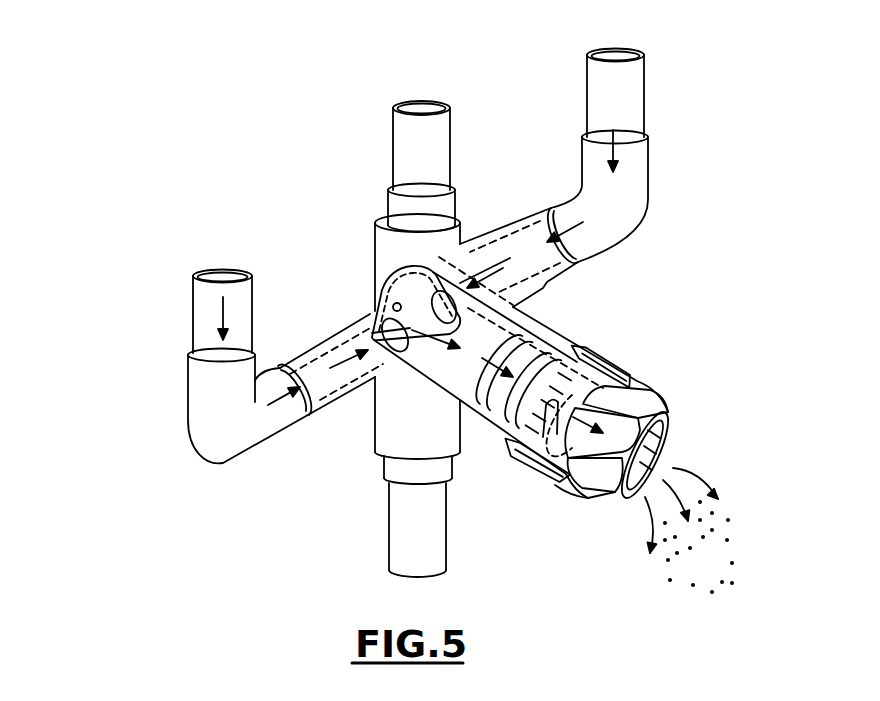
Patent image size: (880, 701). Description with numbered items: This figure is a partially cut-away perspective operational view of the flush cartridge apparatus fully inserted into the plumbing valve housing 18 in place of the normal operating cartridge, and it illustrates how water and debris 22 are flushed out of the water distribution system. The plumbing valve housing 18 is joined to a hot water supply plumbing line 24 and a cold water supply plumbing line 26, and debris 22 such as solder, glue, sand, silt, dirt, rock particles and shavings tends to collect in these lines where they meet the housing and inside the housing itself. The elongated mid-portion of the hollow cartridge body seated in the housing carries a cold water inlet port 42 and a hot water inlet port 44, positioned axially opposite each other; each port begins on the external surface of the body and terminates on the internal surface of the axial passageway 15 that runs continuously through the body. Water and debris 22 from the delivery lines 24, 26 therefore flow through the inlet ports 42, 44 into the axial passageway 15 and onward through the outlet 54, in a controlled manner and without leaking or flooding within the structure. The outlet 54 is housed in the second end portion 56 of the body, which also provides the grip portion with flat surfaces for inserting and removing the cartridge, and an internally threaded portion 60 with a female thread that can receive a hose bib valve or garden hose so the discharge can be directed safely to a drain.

The axial passageway 15 is at (517, 306).
The plumbing valve housing 18 is at (387, 412).
The debris 22 is at (722, 574).
The hot water supply plumbing line 24 is at (193, 326).
The cold water supply plumbing line 26 is at (632, 102).
The cold water inlet port 42 is at (468, 285).
The hot water inlet port 44 is at (372, 330).
The outlet 54 is at (690, 455).
The second end portion 56 is at (601, 509).
The internally threaded portion 60 is at (647, 500).